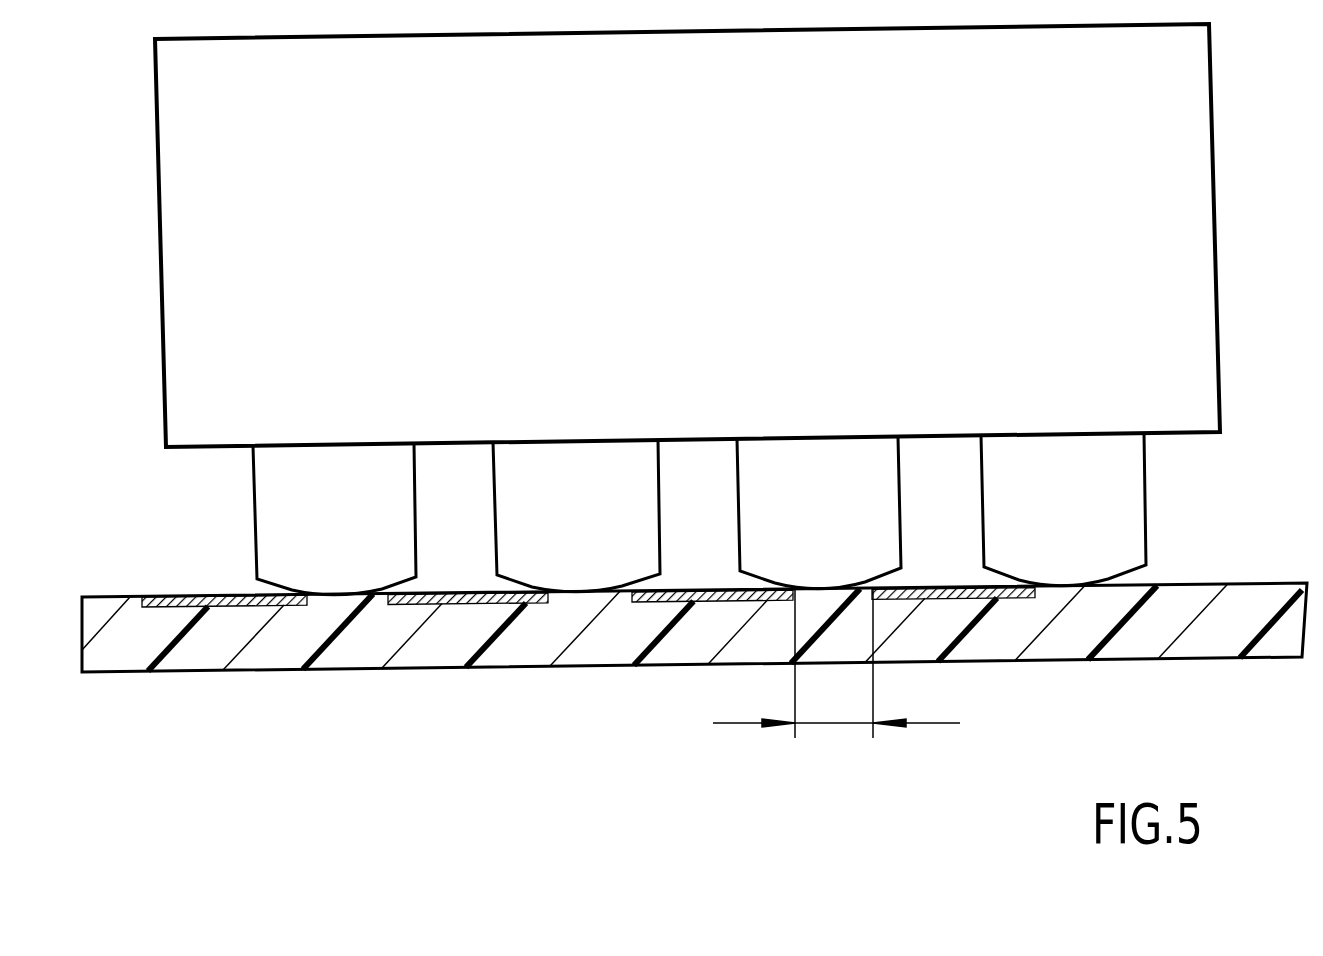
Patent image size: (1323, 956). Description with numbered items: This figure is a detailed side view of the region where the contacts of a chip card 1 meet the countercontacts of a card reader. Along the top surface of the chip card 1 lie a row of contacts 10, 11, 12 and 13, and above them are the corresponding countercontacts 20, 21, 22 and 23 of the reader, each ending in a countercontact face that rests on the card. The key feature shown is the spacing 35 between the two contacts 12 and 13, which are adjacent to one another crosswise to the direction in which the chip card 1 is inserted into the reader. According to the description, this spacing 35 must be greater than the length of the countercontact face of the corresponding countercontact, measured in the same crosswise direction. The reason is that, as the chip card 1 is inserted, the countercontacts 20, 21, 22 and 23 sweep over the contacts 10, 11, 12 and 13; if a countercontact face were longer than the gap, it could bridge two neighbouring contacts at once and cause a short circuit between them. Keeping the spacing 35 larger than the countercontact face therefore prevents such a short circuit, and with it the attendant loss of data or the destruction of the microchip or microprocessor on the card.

The chip card 1 is at (1230, 630).
The contact 10 is at (245, 608).
The contact 11 is at (452, 607).
The contact 12 is at (708, 600).
The contact 13 is at (1013, 595).
The countercontact 20 is at (379, 477).
The countercontact 21 is at (598, 470).
The countercontact 22 is at (850, 465).
The countercontact 23 is at (1097, 462).
The spacing 35 is at (838, 725).